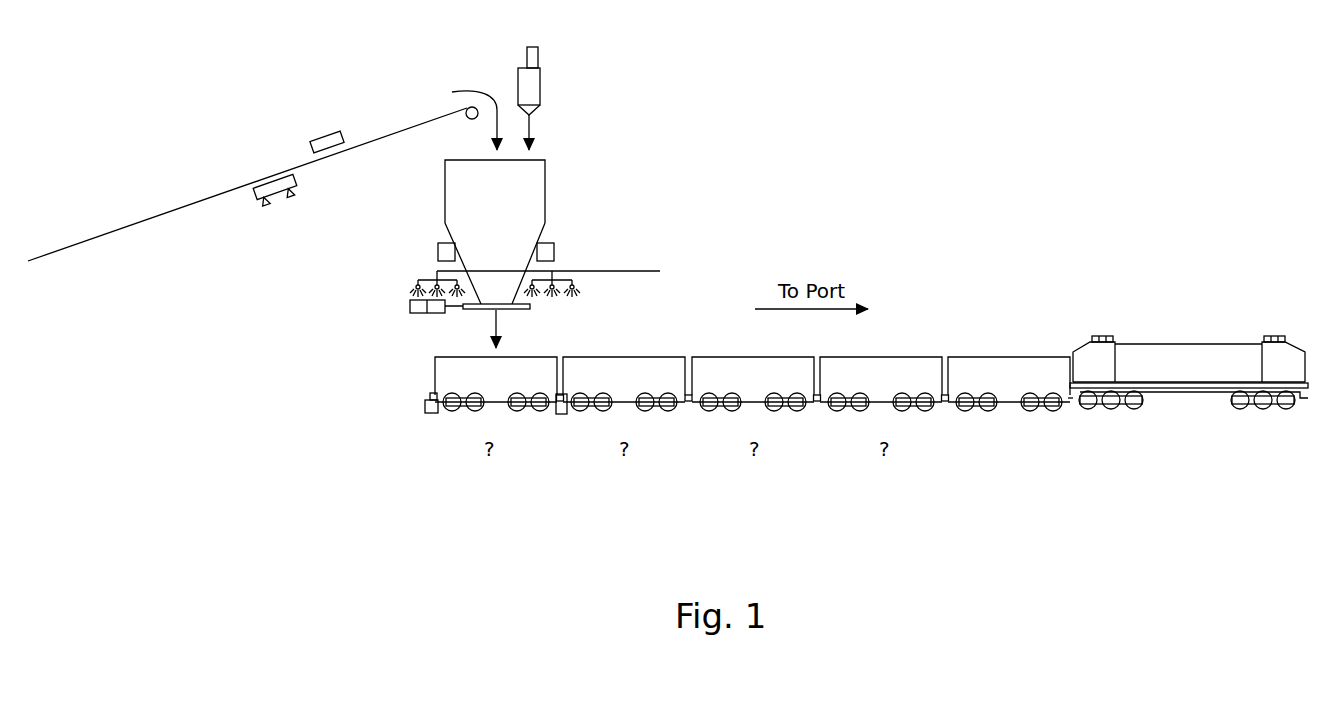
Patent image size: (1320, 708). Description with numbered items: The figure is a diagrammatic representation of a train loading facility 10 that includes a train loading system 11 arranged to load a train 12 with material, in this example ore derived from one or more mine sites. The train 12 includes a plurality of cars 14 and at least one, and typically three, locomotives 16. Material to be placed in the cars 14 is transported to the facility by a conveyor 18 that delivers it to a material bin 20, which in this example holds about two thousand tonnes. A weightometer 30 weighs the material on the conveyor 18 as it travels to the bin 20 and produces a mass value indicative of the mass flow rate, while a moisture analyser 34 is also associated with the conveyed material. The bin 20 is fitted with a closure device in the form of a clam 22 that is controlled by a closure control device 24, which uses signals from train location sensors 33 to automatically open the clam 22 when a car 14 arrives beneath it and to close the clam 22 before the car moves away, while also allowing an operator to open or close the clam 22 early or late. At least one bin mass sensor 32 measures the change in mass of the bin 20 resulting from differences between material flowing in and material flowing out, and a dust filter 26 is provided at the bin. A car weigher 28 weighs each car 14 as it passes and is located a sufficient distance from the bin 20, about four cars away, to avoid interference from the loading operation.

The train loading facility 10 is at (872, 138).
The train loading system 11 is at (640, 136).
The train 12 is at (1026, 301).
The cars 14 is at (530, 370).
The locomotives 16 is at (1202, 365).
The conveyor 18 is at (118, 228).
The material bin 20 is at (546, 200).
The clam 22 is at (478, 310).
The closure control device 24 is at (410, 306).
The dust filter 26 is at (530, 90).
The car weigher 28 is at (1016, 428).
The weightometer 30 is at (273, 188).
The bin mass sensor 32 is at (438, 249).
The train location sensors 33 is at (554, 424).
The moisture analyser 34 is at (327, 141).